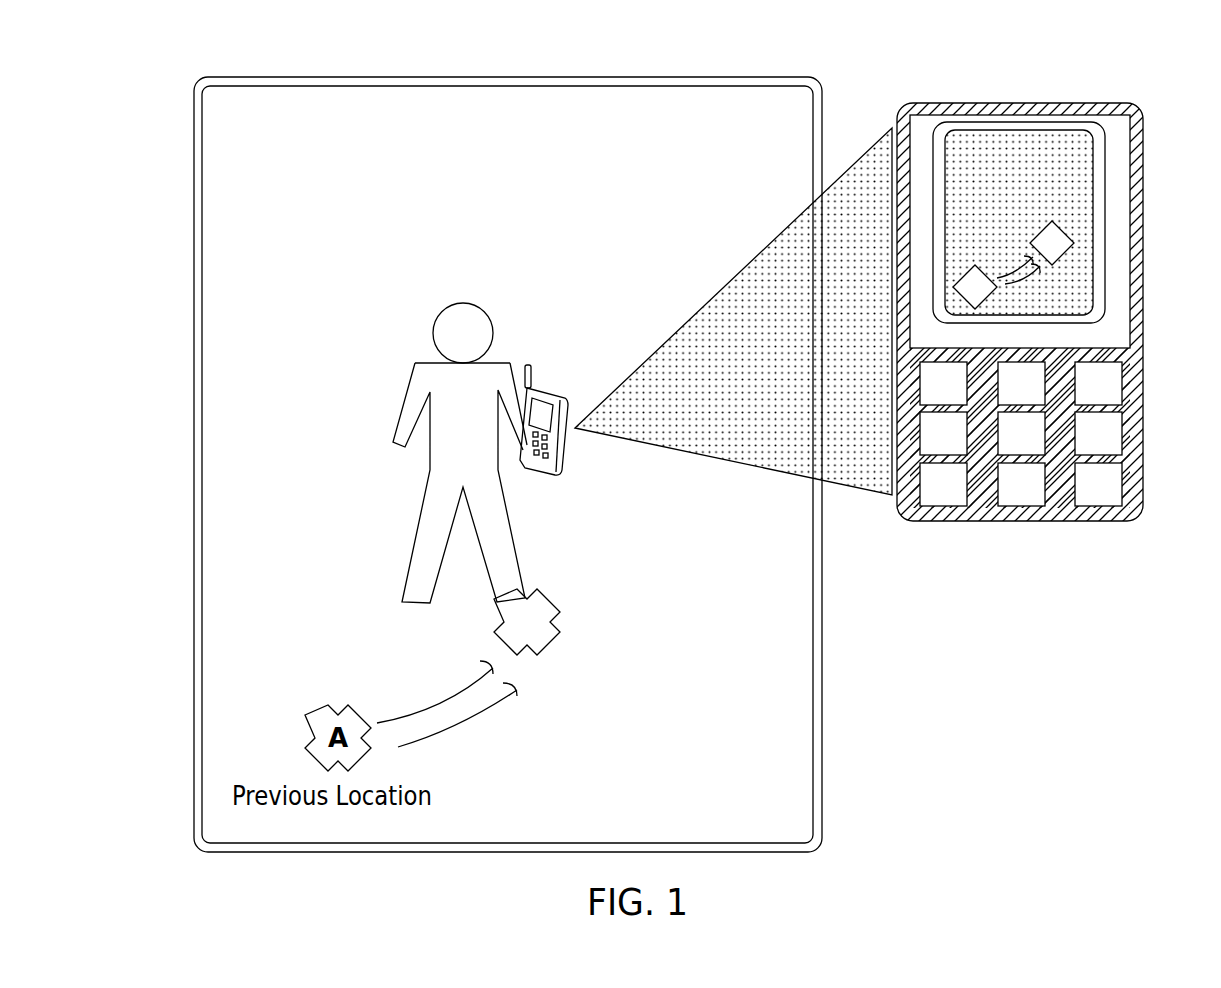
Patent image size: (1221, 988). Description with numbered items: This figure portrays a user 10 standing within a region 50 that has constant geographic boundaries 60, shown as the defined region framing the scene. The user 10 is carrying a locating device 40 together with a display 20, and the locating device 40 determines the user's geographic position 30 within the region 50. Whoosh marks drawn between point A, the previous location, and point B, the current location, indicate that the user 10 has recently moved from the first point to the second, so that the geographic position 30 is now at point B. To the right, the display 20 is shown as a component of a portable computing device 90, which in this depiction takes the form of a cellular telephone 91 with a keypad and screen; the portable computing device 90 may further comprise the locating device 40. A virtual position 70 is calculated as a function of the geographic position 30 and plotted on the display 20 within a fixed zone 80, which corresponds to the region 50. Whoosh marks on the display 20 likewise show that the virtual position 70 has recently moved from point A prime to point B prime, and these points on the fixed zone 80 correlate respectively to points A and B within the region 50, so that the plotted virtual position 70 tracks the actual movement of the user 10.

The user 10 is at (478, 466).
The display 20 is at (1112, 127).
The geographic position 30 is at (560, 632).
The locating device 40 is at (888, 350).
The region 50 is at (308, 140).
The geographic boundaries 60 is at (222, 80).
The virtual position 70 is at (1073, 238).
The fixed zone 80 is at (1073, 177).
The portable computing device 90 is at (1021, 500).
The cellular telephone 91 is at (1021, 550).